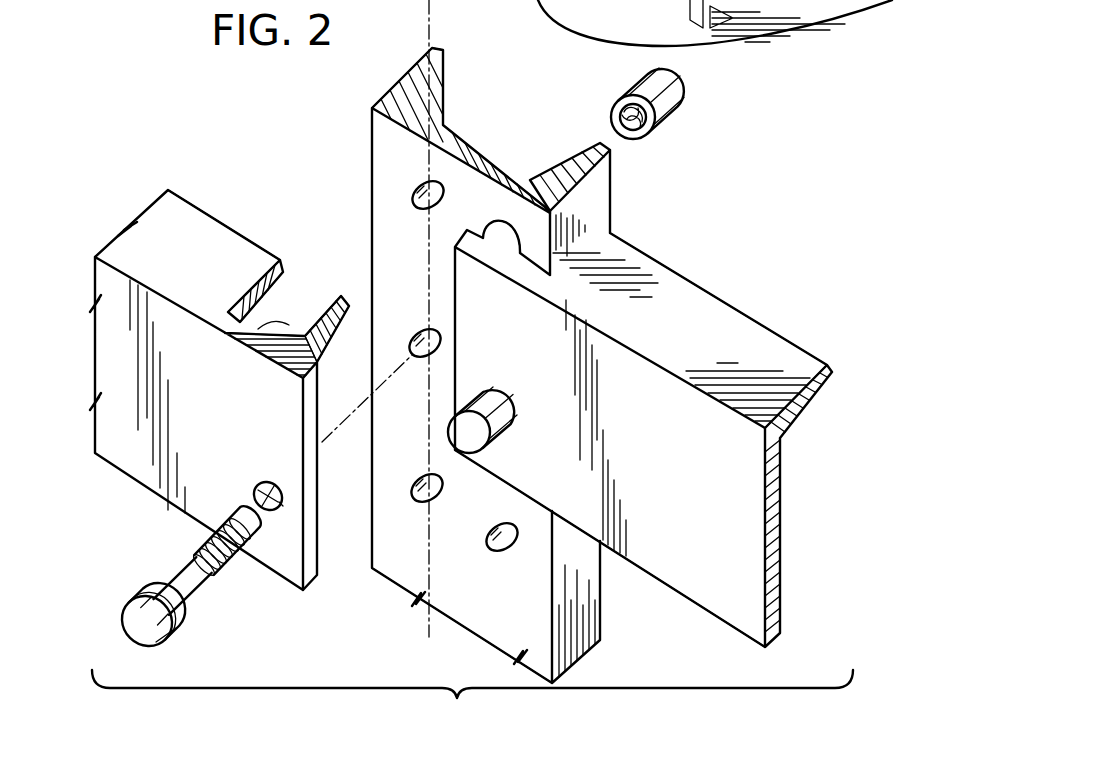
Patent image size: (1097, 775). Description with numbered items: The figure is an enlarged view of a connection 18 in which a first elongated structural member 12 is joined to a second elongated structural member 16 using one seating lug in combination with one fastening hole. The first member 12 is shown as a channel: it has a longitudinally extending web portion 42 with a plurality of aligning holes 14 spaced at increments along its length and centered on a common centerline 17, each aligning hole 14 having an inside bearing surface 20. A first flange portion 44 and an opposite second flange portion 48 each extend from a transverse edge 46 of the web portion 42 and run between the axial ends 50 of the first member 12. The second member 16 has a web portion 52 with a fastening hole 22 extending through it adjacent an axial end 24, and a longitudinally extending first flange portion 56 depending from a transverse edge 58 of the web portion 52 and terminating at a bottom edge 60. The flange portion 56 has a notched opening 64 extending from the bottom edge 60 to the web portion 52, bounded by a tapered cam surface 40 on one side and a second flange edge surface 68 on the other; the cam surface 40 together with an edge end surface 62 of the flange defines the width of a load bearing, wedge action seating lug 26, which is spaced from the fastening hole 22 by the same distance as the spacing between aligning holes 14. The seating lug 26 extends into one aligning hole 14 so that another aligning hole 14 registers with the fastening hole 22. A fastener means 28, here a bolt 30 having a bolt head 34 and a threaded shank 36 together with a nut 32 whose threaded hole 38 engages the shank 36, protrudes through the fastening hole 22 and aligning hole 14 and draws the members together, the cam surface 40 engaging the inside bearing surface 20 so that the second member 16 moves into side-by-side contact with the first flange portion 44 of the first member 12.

The first elongated structural member 12 is at (385, 80).
The aligning holes 14 is at (497, 553).
The second elongated structural member 16 is at (132, 475).
The centerline 17 is at (431, 22).
The connection 18 is at (655, 233).
The inside bearing surface 20 is at (413, 187).
The fastening hole 22 is at (281, 503).
The axial end 24 is at (463, 297).
The seating lug 26 is at (505, 224).
The fastener means 28 is at (177, 641).
The bolt 30 is at (183, 595).
The nut 32 is at (697, 114).
The bolt head 34 is at (180, 624).
The threaded shank 36 is at (230, 557).
The threaded hole 38 is at (622, 132).
The cam surface 40 is at (253, 345).
The web portion 42 is at (523, 612).
The first flange portion 44 is at (593, 572).
The transverse edge 46 is at (373, 550).
The second flange portion 48 is at (413, 74).
The axial ends 50 is at (483, 163).
The web portion 52 is at (200, 463).
The first flange portion 56 is at (165, 220).
The transverse edge 58 is at (130, 280).
The bottom edge 60 is at (205, 217).
The edge end surfaces 62 is at (323, 349).
The notched opening 64 is at (301, 302).
The second flange edge surface 68 is at (273, 306).